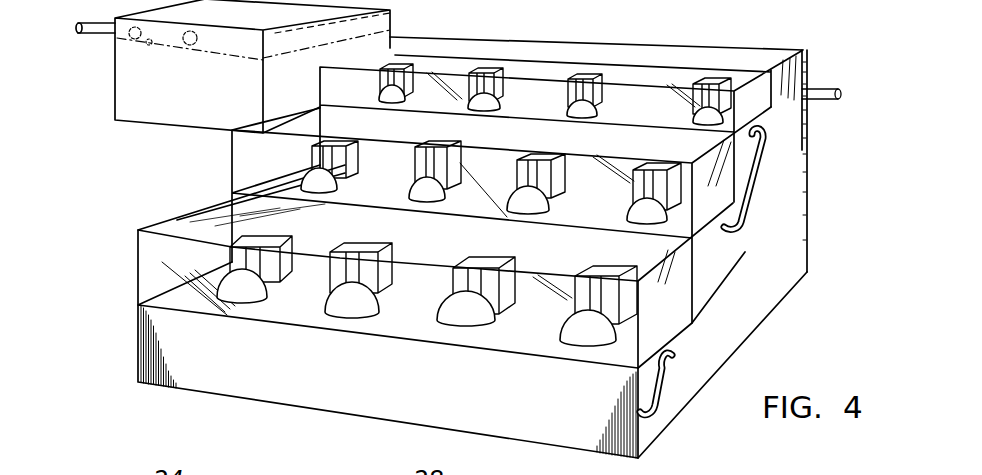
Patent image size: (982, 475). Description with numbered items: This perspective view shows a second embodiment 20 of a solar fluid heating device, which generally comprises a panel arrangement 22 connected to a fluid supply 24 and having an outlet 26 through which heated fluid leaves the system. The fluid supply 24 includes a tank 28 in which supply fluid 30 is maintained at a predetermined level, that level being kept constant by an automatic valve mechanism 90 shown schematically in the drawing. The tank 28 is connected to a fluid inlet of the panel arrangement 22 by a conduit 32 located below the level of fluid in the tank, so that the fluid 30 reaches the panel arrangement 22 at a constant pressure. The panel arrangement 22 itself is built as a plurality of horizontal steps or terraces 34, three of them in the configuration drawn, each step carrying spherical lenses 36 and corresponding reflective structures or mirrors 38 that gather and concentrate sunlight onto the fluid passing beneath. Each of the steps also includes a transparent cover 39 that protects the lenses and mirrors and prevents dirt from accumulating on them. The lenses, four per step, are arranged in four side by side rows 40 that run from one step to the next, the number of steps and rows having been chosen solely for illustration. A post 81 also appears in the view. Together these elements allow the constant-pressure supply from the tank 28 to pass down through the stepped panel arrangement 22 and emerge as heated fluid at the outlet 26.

The second embodiment 20 is at (617, 33).
The panel arrangement 22 is at (720, 42).
The fluid supply 24 is at (133, 123).
The outlet 26 is at (826, 89).
The tank 28 is at (115, 82).
The supply fluid 30 is at (196, 97).
The conduit 32 is at (302, 108).
The steps 34 is at (767, 104).
The spherical lenses 36 is at (466, 104).
The mirrors 38 is at (462, 80).
The transparent cover 39 is at (343, 62).
The rows 40 is at (230, 305).
The post 81 is at (399, 66).
The automatic valve mechanism 90 is at (135, 43).